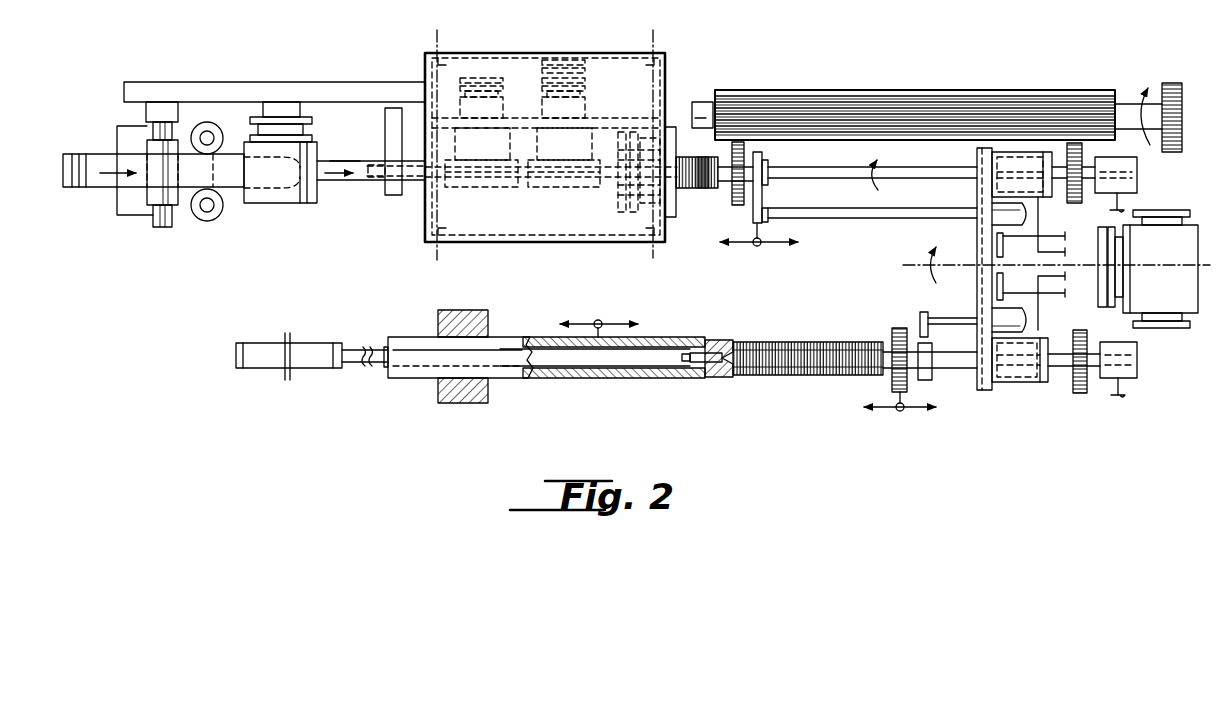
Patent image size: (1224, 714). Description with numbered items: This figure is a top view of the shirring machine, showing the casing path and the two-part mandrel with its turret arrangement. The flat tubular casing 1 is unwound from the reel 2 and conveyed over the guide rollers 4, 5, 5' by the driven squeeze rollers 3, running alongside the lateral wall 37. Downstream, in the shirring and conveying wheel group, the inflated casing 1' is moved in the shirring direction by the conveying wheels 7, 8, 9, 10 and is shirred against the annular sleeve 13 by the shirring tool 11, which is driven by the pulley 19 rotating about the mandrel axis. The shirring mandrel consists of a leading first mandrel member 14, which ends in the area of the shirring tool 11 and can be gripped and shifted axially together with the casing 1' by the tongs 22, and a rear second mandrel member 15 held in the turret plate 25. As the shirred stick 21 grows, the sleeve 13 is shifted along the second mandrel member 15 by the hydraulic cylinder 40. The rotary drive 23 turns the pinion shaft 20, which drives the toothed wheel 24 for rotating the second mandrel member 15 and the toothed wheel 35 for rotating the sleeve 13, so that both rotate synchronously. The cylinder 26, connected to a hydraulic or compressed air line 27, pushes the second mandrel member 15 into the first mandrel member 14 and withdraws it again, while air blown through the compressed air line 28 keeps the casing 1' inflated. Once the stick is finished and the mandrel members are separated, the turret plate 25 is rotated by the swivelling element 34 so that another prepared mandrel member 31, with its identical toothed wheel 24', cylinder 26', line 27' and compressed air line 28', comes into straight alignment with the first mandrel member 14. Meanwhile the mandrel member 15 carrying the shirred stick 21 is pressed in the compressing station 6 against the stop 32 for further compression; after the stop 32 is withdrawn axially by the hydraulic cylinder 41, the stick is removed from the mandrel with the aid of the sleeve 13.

The flat tubular casing 1 is at (328, 209).
The inflated casing 1' is at (345, 205).
The reel 2 is at (100, 184).
The squeeze roller 3 is at (284, 197).
The guide roller 4 is at (148, 196).
The guide roller 5 is at (204, 230).
The guide roller 5' is at (207, 95).
The compressing station 6 is at (666, 327).
The conveying wheel 7 is at (551, 155).
The conveying wheel 8 is at (479, 190).
The conveying wheel 9 is at (569, 170).
The conveying wheel 10 is at (569, 190).
The shirring tool 11 is at (672, 123).
The annular sleeve 13 is at (729, 188).
The first mandrel member 14 is at (372, 177).
The second mandrel member 15 is at (697, 365).
The pulley 19 is at (627, 214).
The pinion shaft 20 is at (864, 90).
The shirred stick 21 is at (687, 191).
The tongs 22 is at (385, 138).
The rotary drive 23 is at (1169, 84).
The toothed wheel 24 is at (1074, 388).
The toothed wheel 24' is at (1075, 192).
The turret plate 25 is at (983, 392).
The cylinder 26 is at (1020, 387).
The cylinder 26' is at (995, 179).
The hydraulic line or compressed air line 27 is at (996, 301).
The hydraulic line or compressed air line 27' is at (997, 227).
The compressed air line 28 is at (1131, 372).
The compressed air line 28' is at (1134, 184).
The prepared mandrel member 31 is at (838, 172).
The stop 32 is at (720, 338).
The swivelling element 34 is at (1164, 304).
The toothed wheel 35 is at (737, 205).
The lateral wall 37 is at (263, 92).
The hydraulic cylinder 40 is at (1012, 317).
The hydraulic cylinder 41 is at (314, 362).